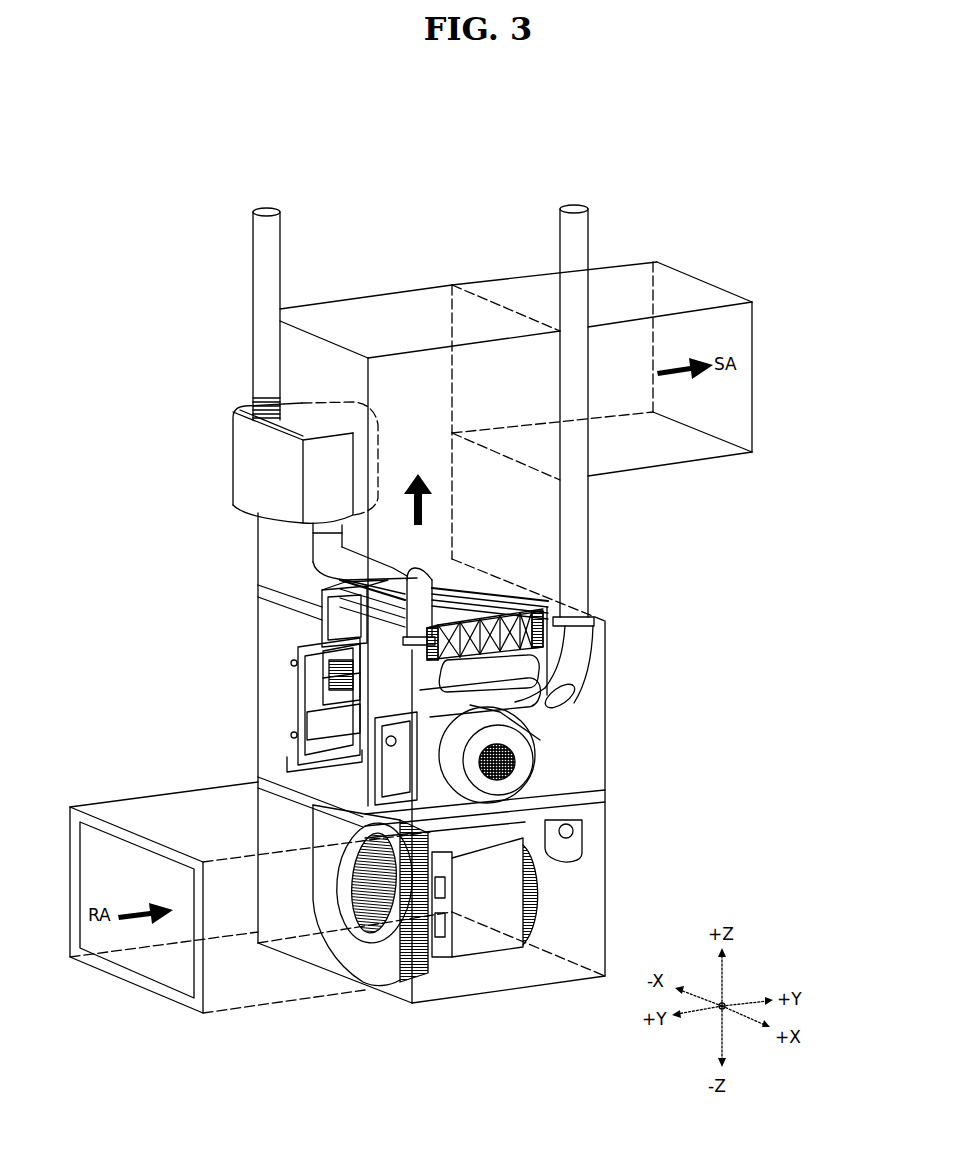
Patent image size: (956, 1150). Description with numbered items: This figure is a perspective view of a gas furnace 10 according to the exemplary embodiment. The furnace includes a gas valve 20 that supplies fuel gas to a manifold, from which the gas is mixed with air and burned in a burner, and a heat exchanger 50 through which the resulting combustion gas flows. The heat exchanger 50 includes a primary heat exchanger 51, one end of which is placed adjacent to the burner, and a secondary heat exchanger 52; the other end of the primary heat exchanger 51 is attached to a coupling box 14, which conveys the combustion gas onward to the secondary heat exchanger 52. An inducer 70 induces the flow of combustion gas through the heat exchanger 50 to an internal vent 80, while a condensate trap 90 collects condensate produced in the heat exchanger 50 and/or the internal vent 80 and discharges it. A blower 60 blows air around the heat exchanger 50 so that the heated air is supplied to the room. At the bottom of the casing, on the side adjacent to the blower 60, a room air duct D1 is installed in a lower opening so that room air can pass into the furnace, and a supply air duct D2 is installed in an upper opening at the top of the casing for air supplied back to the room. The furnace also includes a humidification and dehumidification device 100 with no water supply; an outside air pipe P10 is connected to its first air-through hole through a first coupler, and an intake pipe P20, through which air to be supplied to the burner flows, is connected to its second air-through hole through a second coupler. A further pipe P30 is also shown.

The gas furnace 10 is at (131, 187).
The coupling box 14 is at (300, 684).
The gas valve 20 is at (556, 679).
The heat exchanger 50 is at (256, 676).
The primary heat exchanger 51 is at (331, 634).
The secondary heat exchanger 52 is at (294, 748).
The blower 60 is at (369, 958).
The inducer 70 is at (495, 790).
The internal vent 80 is at (567, 693).
The condensate trap 90 is at (580, 840).
The humidification and dehumidification device 100 is at (217, 479).
The outside air pipe P10 is at (271, 251).
The intake pipe P20 is at (334, 567).
The third pipe P30 is at (574, 529).
The room air duct D1 is at (140, 798).
The supply air duct D2 is at (627, 262).